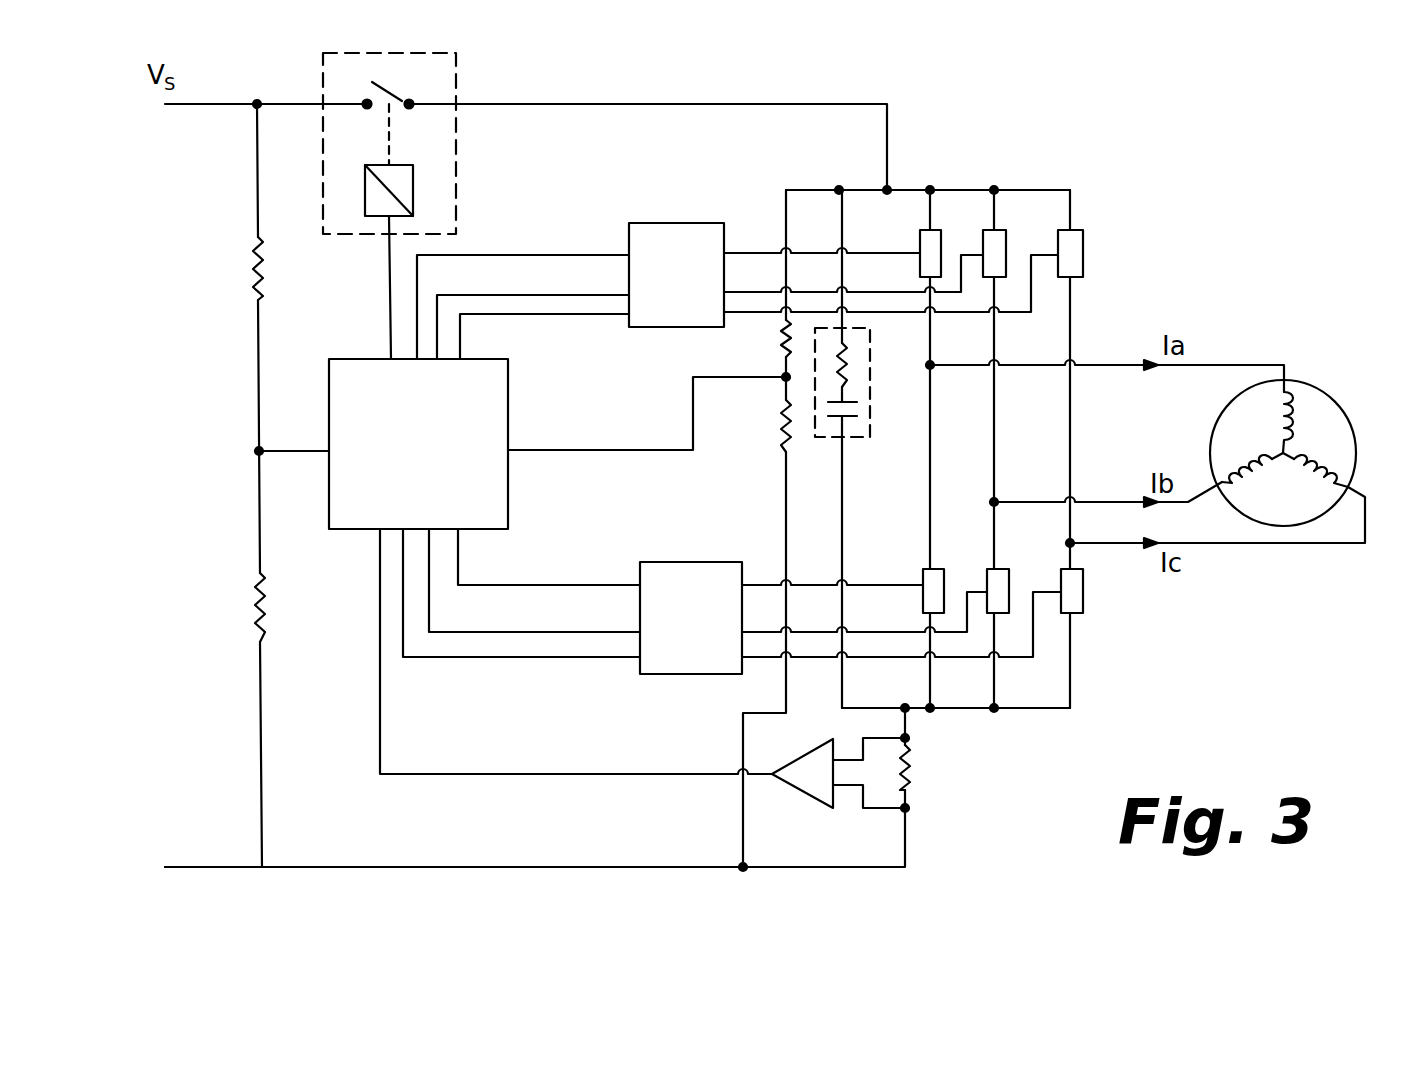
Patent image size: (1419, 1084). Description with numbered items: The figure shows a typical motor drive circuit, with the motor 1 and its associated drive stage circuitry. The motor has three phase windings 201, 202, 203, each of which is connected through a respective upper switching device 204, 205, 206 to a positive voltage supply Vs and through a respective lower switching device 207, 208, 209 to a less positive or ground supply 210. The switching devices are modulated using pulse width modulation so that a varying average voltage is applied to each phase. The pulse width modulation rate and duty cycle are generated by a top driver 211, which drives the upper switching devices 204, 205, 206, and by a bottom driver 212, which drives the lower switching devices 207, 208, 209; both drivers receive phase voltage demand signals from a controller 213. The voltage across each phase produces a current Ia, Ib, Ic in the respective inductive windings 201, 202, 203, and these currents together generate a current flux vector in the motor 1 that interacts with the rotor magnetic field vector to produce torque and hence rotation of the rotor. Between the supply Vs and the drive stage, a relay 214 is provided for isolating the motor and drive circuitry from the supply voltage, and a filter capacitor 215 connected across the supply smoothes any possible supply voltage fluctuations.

The three-phase motor 1 is at (1314, 428).
The phase winding 201 is at (1295, 412).
The phase winding 202 is at (1247, 474).
The phase winding 203 is at (1352, 467).
The upper switching device 204 is at (941, 240).
The upper switching device 205 is at (1008, 248).
The upper switching device 206 is at (1083, 245).
The lower switching device 207 is at (932, 578).
The lower switching device 208 is at (998, 578).
The lower switching device 209 is at (1070, 578).
The ground supply 210 is at (220, 867).
The top driver 211 is at (648, 222).
The bottom driver 212 is at (645, 570).
The controller 213 is at (508, 393).
The relay 214 is at (397, 90).
The filter capacitor 215 is at (871, 390).